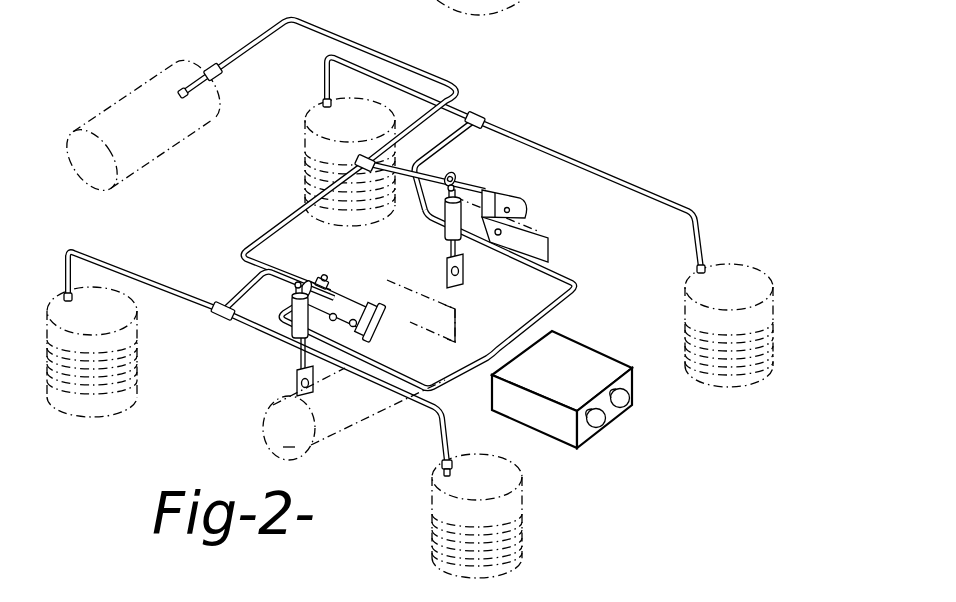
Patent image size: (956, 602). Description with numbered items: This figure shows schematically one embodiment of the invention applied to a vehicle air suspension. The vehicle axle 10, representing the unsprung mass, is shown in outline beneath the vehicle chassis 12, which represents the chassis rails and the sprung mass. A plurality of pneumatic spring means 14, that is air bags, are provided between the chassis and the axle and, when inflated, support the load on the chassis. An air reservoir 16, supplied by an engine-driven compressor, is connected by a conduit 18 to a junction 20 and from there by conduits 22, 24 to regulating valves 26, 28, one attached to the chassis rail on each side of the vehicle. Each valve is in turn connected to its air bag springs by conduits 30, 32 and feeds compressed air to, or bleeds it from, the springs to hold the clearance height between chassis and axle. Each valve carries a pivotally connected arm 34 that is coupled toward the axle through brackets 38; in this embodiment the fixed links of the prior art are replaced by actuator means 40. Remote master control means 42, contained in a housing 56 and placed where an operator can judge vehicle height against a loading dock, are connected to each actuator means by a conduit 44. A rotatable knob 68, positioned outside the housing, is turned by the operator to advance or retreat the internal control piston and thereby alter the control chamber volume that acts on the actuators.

The vehicle axle 10 is at (362, 414).
The vehicle chassis 12 is at (553, 246).
The pneumatic spring means 14 is at (60, 299).
The air reservoir 16 is at (165, 151).
The conduit 18 is at (320, 35).
The junction 20 is at (318, 152).
The conduit 22 is at (277, 225).
The conduit 24 is at (410, 214).
The regulating valve 26 is at (348, 295).
The regulating valve 28 is at (505, 187).
The conduit 30 is at (253, 279).
The conduit 32 is at (523, 141).
The arm 34 is at (333, 290).
The bracket 38 is at (296, 385).
The actuator means 40 is at (330, 330).
The remote master control means 42 is at (566, 393).
The conduit 44 is at (578, 298).
The housing 56 is at (550, 425).
The rotatable knob 68 is at (620, 408).